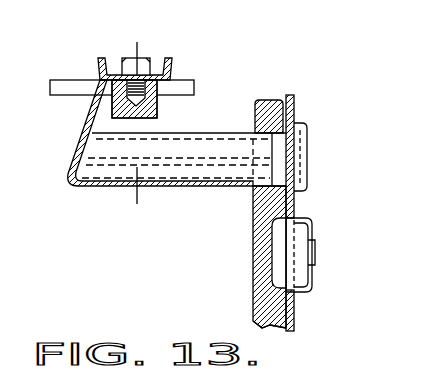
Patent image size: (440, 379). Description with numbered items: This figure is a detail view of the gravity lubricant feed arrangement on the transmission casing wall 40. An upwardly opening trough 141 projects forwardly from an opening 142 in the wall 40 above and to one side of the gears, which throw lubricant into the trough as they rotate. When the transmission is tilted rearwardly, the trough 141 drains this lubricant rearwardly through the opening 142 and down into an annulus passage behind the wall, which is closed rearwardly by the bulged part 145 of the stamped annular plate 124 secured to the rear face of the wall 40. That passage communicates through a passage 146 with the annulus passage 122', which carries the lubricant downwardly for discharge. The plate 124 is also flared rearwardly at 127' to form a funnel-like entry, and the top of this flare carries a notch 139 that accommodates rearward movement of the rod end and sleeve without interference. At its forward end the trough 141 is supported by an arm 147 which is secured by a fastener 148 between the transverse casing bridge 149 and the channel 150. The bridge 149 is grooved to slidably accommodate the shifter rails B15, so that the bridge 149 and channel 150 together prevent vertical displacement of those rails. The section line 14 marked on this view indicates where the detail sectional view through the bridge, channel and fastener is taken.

The section line 14— 14 is at (150, 46).
The shifter rail B15 is at (193, 80).
The arm 147 is at (90, 113).
The trough 141 is at (176, 186).
The transverse casing bridge 149 is at (158, 106).
The channel 150 is at (172, 63).
The fastener 148 is at (154, 61).
The opening 142 is at (284, 130).
The passage 146 is at (252, 214).
The annulus passage 122' is at (239, 253).
The wall 40 is at (258, 298).
The plate 124 is at (294, 318).
The bulged part 145 is at (306, 158).
The flare 127' is at (322, 249).
The notch 139 is at (315, 246).